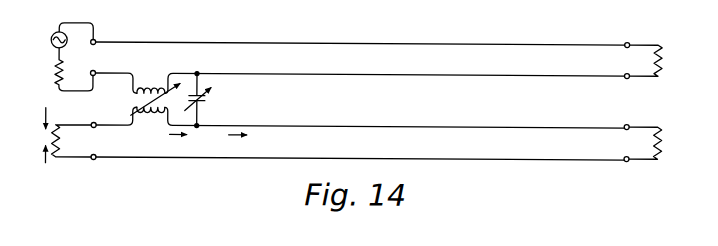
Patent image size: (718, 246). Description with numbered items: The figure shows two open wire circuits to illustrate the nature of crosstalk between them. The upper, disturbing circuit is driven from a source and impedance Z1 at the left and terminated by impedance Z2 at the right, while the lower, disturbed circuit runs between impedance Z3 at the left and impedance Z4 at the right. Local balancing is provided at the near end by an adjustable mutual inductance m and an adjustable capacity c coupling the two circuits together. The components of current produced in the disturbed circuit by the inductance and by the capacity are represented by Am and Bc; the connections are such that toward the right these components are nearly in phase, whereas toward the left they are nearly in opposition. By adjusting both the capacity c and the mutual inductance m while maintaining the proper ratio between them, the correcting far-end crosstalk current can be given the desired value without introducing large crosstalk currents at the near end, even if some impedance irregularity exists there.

The source impedance with generator and resistor Z1 is at (47, 20).
The terminating impedance of upper line Z2 is at (654, 61).
The terminating impedance of lower line (left) Z3 is at (74, 140).
The terminating impedance of lower line (right) Z4 is at (654, 143).
The adjustable mutual inductance m is at (134, 99).
The adjustable capacity c is at (207, 100).
The current component due to inductance Am is at (113, 126).
The current component due to capacity Bc is at (147, 157).